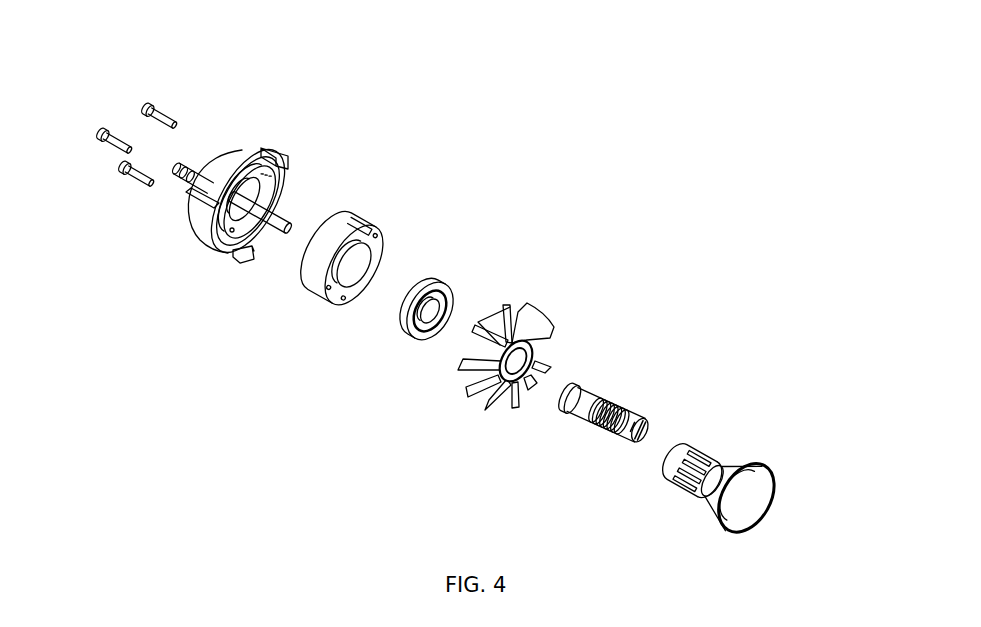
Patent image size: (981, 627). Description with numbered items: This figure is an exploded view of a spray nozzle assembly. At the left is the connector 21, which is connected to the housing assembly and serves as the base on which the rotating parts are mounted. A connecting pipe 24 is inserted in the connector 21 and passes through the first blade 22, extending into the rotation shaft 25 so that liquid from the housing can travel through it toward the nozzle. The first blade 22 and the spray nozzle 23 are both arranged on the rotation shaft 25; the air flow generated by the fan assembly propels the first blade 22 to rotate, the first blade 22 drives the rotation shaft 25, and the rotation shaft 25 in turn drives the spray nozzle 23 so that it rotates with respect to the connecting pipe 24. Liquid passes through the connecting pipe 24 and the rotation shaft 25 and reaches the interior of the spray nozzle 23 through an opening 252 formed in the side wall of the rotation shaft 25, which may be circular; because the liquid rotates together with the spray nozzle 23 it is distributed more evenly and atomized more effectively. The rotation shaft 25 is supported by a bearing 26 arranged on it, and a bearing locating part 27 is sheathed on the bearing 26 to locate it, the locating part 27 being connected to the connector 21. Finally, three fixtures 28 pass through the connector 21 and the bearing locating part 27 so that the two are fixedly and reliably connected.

The connector 21 is at (283, 165).
The first blade 22 is at (530, 315).
The spray nozzle 23 is at (723, 463).
The connecting pipe 24 is at (239, 232).
The rotation shaft 25 is at (583, 403).
The opening 252 is at (630, 433).
The bearing 26 is at (410, 304).
The bearing locating part 27 is at (350, 222).
The fixture 28 is at (160, 113).